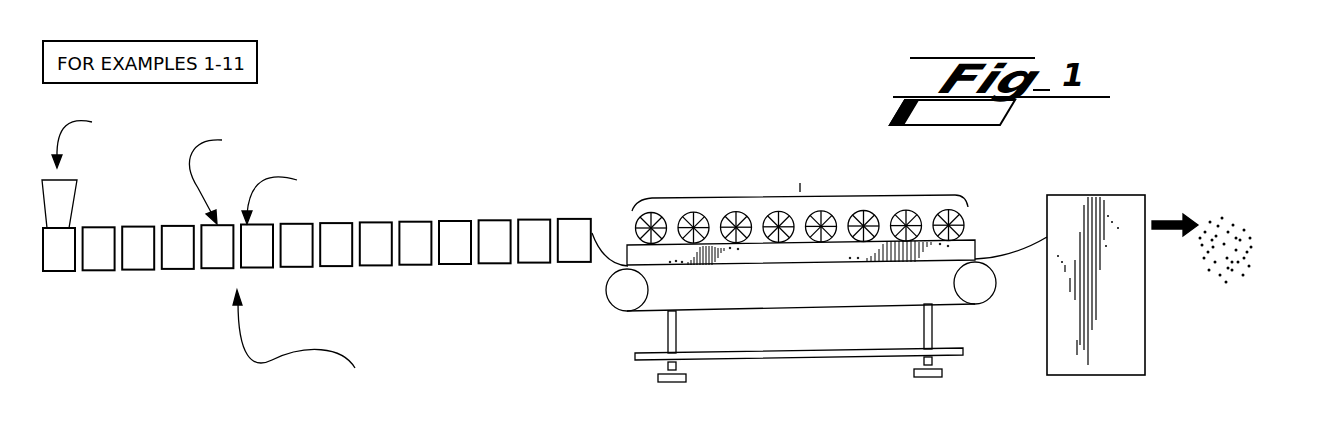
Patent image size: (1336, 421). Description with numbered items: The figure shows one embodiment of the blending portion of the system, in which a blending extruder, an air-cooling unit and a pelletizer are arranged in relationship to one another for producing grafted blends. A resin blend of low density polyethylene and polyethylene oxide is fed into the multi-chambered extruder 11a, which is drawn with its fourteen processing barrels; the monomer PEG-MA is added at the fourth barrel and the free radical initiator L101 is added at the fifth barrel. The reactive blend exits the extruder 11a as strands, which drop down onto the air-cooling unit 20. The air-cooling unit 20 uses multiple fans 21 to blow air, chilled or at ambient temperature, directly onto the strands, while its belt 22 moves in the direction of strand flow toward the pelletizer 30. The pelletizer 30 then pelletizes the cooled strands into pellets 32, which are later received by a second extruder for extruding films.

The extruder 11a is at (524, 196).
The air-cooling unit 20 is at (848, 178).
The fans 21 is at (650, 211).
The belt 22 is at (648, 311).
The pelletizer 30 is at (1065, 195).
The pellets 32 is at (1212, 258).